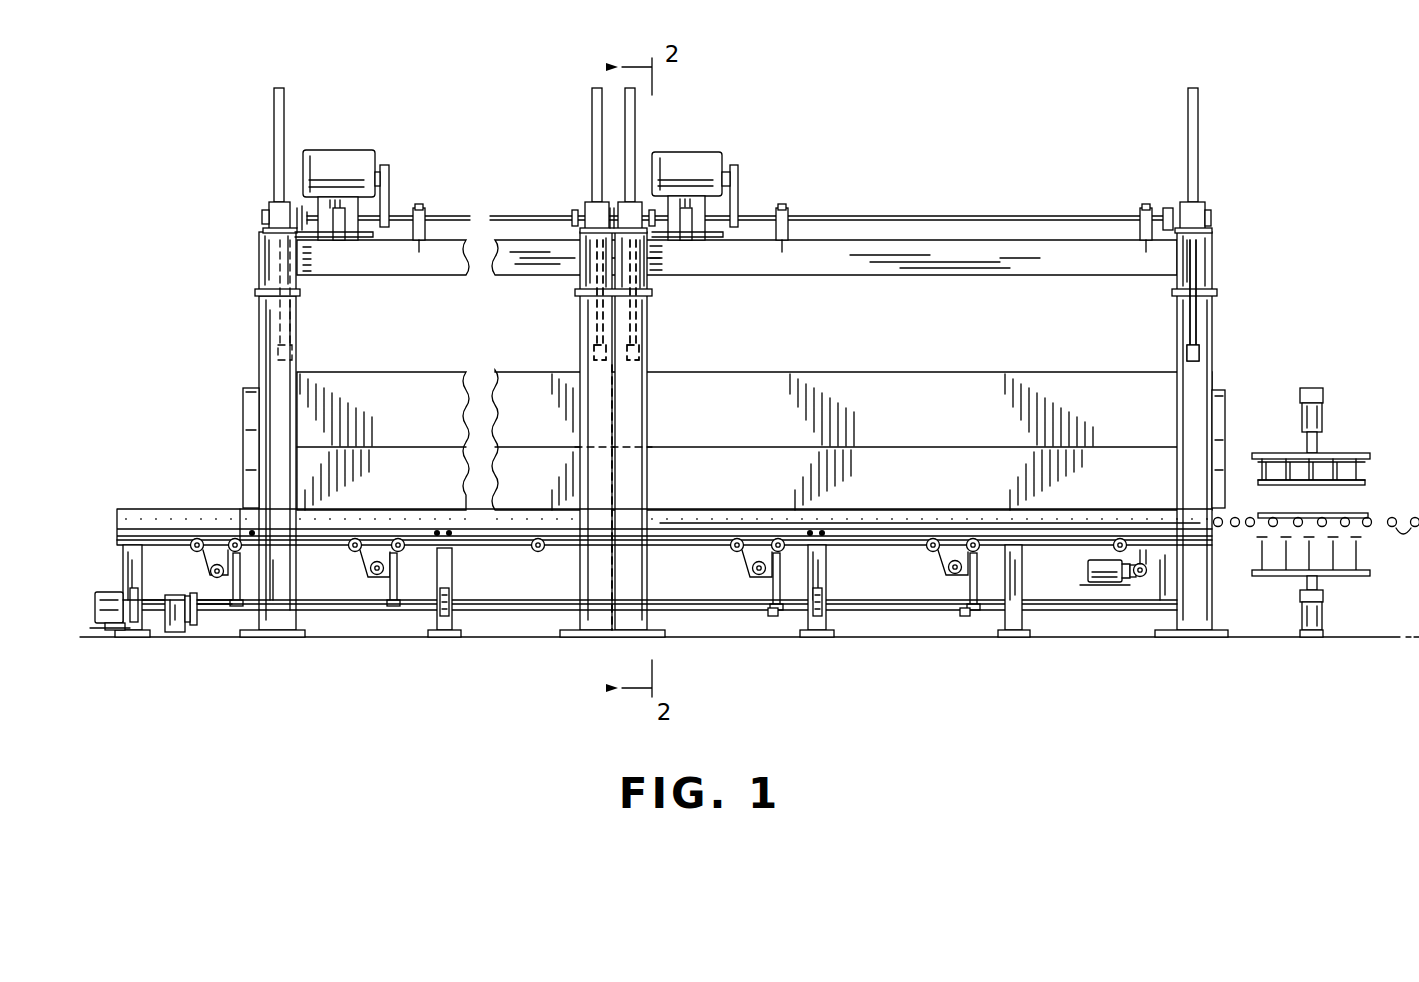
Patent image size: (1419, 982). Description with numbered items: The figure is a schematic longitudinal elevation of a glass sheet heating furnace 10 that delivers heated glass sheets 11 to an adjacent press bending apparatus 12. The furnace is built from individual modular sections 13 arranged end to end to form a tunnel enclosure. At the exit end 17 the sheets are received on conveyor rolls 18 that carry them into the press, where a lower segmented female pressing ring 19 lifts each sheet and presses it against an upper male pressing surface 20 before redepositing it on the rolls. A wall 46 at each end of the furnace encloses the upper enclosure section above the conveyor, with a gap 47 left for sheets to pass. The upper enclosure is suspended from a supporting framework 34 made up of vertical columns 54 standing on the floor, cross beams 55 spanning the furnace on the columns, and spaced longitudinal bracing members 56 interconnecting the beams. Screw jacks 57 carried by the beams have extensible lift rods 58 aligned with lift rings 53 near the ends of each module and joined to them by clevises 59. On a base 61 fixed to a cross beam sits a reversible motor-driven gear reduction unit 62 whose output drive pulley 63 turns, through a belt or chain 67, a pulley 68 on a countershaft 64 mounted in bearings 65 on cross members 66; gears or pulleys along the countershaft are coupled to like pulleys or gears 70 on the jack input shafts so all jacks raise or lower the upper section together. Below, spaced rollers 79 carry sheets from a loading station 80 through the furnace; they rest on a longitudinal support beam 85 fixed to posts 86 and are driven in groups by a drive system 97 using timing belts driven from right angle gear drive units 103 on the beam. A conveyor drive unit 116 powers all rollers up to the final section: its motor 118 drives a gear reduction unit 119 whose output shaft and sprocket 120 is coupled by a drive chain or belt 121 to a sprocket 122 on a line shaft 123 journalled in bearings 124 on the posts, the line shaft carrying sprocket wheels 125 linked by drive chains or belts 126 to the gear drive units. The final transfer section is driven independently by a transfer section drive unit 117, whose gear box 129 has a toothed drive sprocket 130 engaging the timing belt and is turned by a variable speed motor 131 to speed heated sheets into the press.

The heating furnace 10 is at (946, 108).
The glass sheets 11 is at (1358, 512).
The press bending apparatus 12 is at (1370, 440).
The modular sections 13 is at (392, 368).
The exit end 17 is at (1232, 462).
The conveyor rolls 18 is at (1240, 518).
The segmented female pressing ring 19 is at (1362, 541).
The upper male pressing surface 20 is at (1368, 484).
The supporting framework 34 is at (884, 282).
The wall 46 is at (252, 412).
The gap 47 is at (240, 505).
The lift rings 53 is at (1200, 360).
The vertical columns 54 is at (264, 331).
The cross beams 55 is at (268, 270).
The longitudinal bracing members 56 is at (500, 282).
The screw jacks 57 is at (277, 207).
The lift rods 58 is at (283, 326).
The clevises 59 is at (600, 370).
The base 61 is at (358, 236).
The reversible motor-driven gear reduction unit 62 is at (345, 158).
The output drive pulley 63 is at (388, 178).
The countershaft 64 is at (978, 214).
The bearings 65 is at (425, 212).
The cross members 66 is at (420, 255).
The belt or chain 67 is at (390, 198).
The pulley 68 is at (380, 225).
The pulleys or gears 70 is at (1166, 206).
The rollers 79 is at (906, 512).
The loading station 80 is at (126, 494).
The longitudinal support beam 85 is at (697, 544).
The posts 86 is at (130, 572).
The drive system 97 is at (92, 582).
The right angle gear drive unit 103 is at (372, 562).
The conveyor drive unit 116 is at (95, 628).
The transfer section drive unit 117 is at (1098, 592).
The motor 118 is at (97, 610).
The gear reduction unit 119 is at (173, 633).
The output shaft and sprocket 120 is at (190, 625).
The drive chain or belt 121 is at (200, 612).
The sprocket 122 is at (192, 592).
The line shaft 123 is at (320, 604).
The bearings 124 is at (452, 616).
The sprocket wheels 125 is at (770, 616).
The drive chains or belts 126 is at (390, 586).
The gear box 129 is at (1142, 578).
The toothed drive sprocket 130 is at (1133, 578).
The variable speed motor 131 is at (1092, 577).